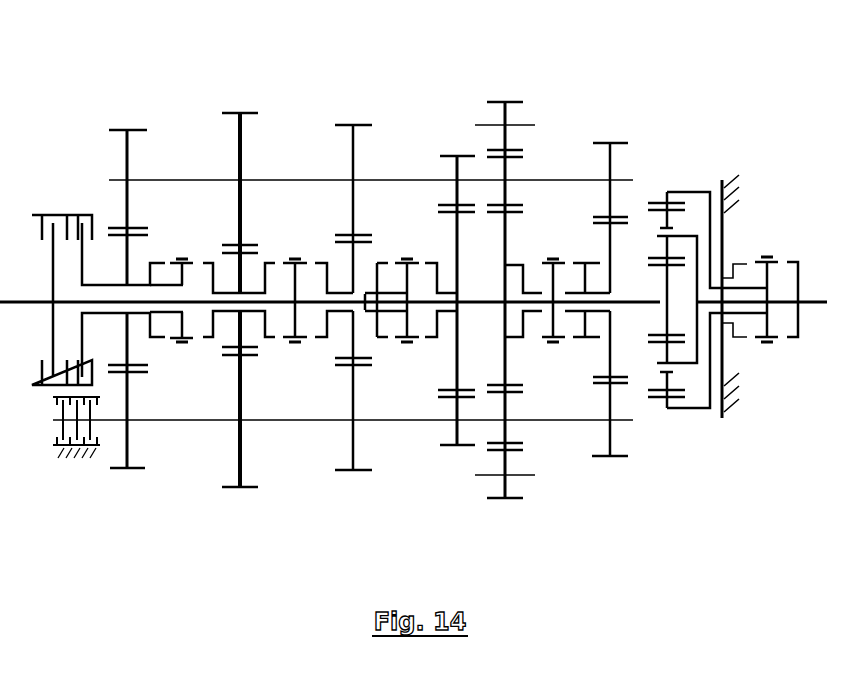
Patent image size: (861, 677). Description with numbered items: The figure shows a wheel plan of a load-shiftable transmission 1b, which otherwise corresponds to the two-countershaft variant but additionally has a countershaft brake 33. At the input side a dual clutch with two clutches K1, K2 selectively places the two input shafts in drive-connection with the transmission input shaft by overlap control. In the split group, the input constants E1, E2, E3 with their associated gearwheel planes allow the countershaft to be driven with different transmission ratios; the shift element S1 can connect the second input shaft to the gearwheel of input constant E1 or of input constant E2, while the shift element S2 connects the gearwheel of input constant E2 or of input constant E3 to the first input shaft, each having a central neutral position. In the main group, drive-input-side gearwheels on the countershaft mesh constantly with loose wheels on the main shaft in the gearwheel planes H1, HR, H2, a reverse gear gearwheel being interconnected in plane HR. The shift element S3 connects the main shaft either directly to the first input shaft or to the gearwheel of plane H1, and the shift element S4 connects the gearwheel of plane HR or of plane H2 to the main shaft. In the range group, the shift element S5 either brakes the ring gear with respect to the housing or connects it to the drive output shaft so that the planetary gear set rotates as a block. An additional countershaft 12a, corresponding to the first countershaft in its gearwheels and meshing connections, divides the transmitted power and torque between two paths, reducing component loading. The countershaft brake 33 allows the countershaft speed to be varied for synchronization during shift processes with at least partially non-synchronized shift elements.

The clutch K2 is at (42, 203).
The clutch K1 is at (78, 203).
The input constant E1 is at (128, 118).
The shift element S1 is at (182, 256).
The input constant E2 is at (240, 104).
The shift element S2 is at (297, 256).
The input constant E3 is at (354, 114).
The shift element S3 is at (405, 256).
The gearwheel plane H1 is at (457, 144).
The gearwheel plane HR is at (506, 92).
The shift element S4 is at (553, 256).
The gearwheel plane H2 is at (610, 132).
The transmission 1b is at (653, 145).
The countershaft 12a is at (631, 180).
The shift element S5 is at (767, 256).
The countershaft brake 33 is at (66, 470).